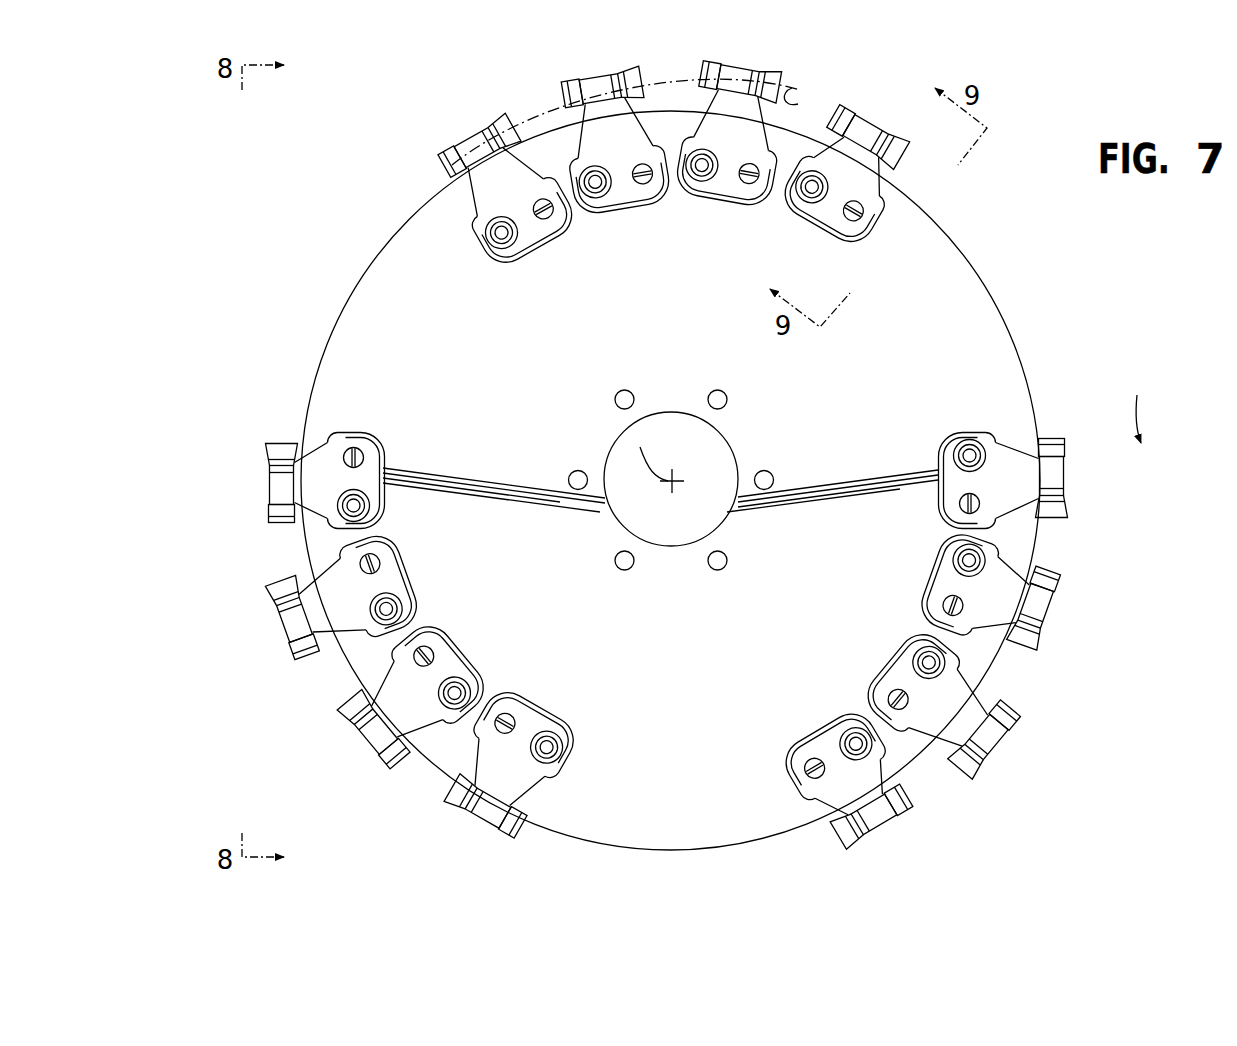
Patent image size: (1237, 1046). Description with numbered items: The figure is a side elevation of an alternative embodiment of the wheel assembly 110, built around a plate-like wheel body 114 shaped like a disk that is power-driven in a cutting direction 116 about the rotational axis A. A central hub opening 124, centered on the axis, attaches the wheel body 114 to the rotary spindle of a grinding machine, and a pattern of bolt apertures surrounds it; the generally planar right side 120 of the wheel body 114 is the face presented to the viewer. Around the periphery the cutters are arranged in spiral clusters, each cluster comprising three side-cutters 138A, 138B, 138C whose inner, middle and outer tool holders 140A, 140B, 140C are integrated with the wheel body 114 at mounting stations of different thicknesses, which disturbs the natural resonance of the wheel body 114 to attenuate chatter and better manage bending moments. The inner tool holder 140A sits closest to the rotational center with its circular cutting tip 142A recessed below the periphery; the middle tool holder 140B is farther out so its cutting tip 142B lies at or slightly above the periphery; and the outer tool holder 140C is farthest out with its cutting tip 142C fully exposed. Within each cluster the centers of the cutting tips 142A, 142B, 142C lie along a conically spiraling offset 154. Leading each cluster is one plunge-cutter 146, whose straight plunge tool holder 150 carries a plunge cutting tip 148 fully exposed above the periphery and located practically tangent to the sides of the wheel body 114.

The wheel assembly 110 is at (250, 218).
The wheel body 114 is at (340, 317).
The cutting direction 116 is at (1140, 410).
The right side 120 is at (596, 640).
The central hub opening 124 is at (728, 458).
The inner side-cutter 138A is at (471, 137).
The middle side-cutter 138B is at (596, 74).
The outer side-cutter 138C is at (754, 63).
The inner tool holder 140A is at (490, 205).
The middle tool holder 140B is at (565, 200).
The outer tool holder 140C is at (712, 190).
The inner cutting tip 142A is at (518, 115).
The middle cutting tip 142B is at (640, 80).
The outer cutting tip 142C is at (787, 86).
The plunge-cutter 146 is at (877, 123).
The plunge cutting tip 148 is at (905, 158).
The plunge tool holder 150 is at (790, 195).
The conically spiraling offset 154 is at (802, 103).